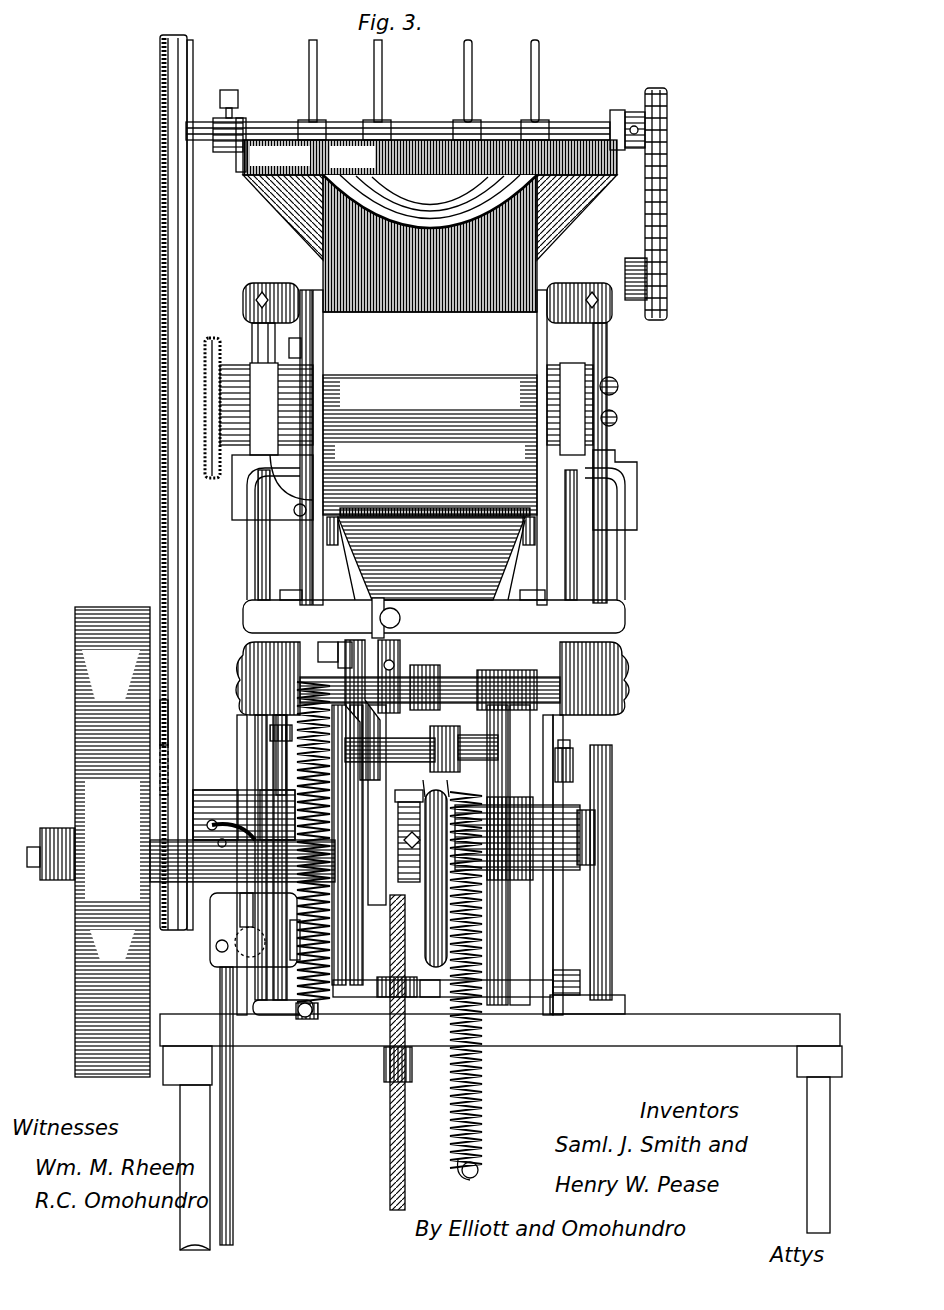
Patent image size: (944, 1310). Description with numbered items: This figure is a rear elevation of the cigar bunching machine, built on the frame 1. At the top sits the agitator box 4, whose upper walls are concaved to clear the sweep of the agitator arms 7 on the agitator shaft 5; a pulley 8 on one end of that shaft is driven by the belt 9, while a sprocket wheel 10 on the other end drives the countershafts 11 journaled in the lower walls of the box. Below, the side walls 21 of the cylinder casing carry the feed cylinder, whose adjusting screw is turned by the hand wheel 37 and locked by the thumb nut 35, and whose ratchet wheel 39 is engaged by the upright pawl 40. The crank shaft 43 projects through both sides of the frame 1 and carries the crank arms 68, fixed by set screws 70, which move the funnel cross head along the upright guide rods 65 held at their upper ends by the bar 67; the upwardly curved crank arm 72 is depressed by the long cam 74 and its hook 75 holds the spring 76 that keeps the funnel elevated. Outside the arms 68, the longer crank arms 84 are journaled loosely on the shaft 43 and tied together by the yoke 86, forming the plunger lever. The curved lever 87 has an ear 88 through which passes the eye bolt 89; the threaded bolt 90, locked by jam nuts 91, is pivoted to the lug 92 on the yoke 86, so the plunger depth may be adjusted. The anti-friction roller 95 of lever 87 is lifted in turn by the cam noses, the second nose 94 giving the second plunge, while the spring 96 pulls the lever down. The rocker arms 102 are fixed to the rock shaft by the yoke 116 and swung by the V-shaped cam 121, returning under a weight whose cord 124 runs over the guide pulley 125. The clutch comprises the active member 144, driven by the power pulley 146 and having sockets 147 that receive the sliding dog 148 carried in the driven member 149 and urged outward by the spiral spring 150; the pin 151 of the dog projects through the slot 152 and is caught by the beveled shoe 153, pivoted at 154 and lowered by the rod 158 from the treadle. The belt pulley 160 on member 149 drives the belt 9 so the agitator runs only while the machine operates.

The frame 1 is at (540, 732).
The agitator box 4 is at (290, 203).
The agitator shaft 5 is at (572, 125).
The agitator arms 7 is at (462, 93).
The pulley 8 is at (160, 89).
The belt 9 is at (172, 408).
The sprocket wheel 10 is at (667, 128).
The countershafts 11 is at (665, 290).
The side walls 21 is at (323, 357).
The thumb nut 35 is at (618, 389).
The hand wheel 37 is at (205, 428).
The ratchet wheel 39 is at (595, 380).
The pawl 40 is at (600, 527).
The crank shaft 43 is at (440, 665).
The guide rods 65 is at (252, 330).
The bar 67 is at (296, 299).
The crank arms 68 is at (432, 678).
The set screws 70 is at (270, 735).
The crank arm 72 is at (490, 647).
The cam 74 is at (508, 950).
The hook 75 is at (490, 740).
The spring 76 is at (482, 1077).
The crank arms 84 is at (246, 562).
The yoke 86 is at (434, 611).
The lever 87 is at (370, 748).
The ear 88 is at (341, 650).
The eye bolt 89 is at (327, 650).
The bolt 90 is at (400, 623).
The jam nuts 91 is at (400, 653).
The lug 92 is at (372, 606).
The cam nose 94 is at (351, 946).
The anti-friction roller 95 is at (398, 797).
The spring 96 is at (320, 1017).
The rocker arms 102 is at (574, 768).
The yoke 116 is at (373, 873).
The cam 121 is at (428, 1002).
The cord 124 is at (400, 1120).
The guide pulley 125 is at (384, 1000).
The active clutch member 144 is at (158, 887).
The power pulley 146 is at (104, 1077).
The sockets 147 is at (160, 785).
The sliding dog 148 is at (200, 792).
The driven clutch member 149 is at (238, 786).
The spiral spring 150 is at (268, 821).
The pin 151 is at (222, 847).
The slot 152 is at (220, 931).
The beveled shoe 153 is at (212, 962).
The pivot 154 is at (296, 940).
The rod 158 is at (233, 1213).
The belt pulley 160 is at (168, 747).